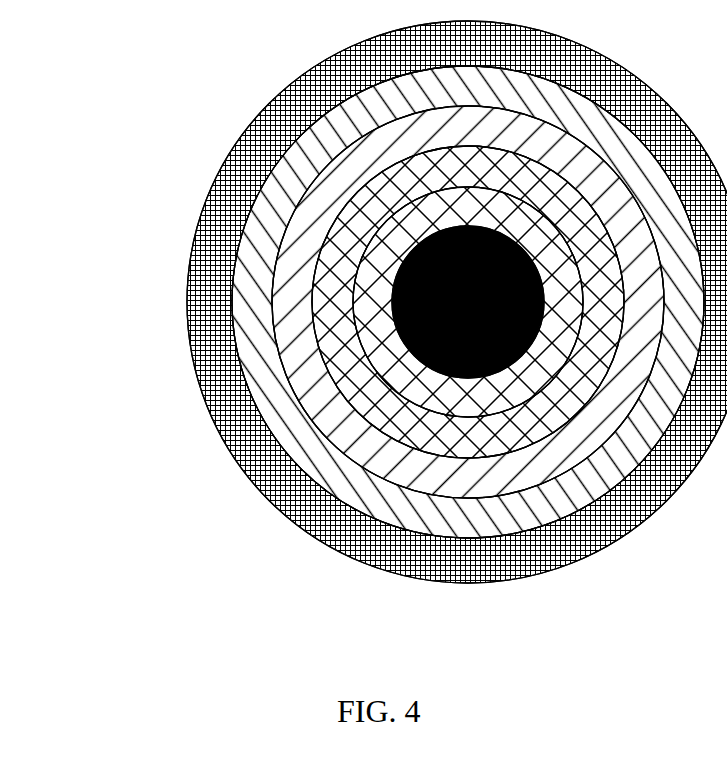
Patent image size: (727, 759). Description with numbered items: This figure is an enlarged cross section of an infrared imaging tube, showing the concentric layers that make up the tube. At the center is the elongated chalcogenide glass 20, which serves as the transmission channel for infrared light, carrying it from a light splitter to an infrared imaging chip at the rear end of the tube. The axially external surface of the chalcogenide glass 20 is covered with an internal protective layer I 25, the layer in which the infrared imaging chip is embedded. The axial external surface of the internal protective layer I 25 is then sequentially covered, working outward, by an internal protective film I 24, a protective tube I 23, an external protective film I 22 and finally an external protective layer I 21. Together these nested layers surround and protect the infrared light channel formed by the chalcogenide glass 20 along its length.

The chalcogenide glass 20 is at (260, 113).
The internal protective layer I 25 is at (232, 149).
The internal protective film I 24 is at (207, 197).
The protective tube I 23 is at (193, 242).
The external protective film I 22 is at (187, 287).
The external protective layer I 21 is at (192, 355).